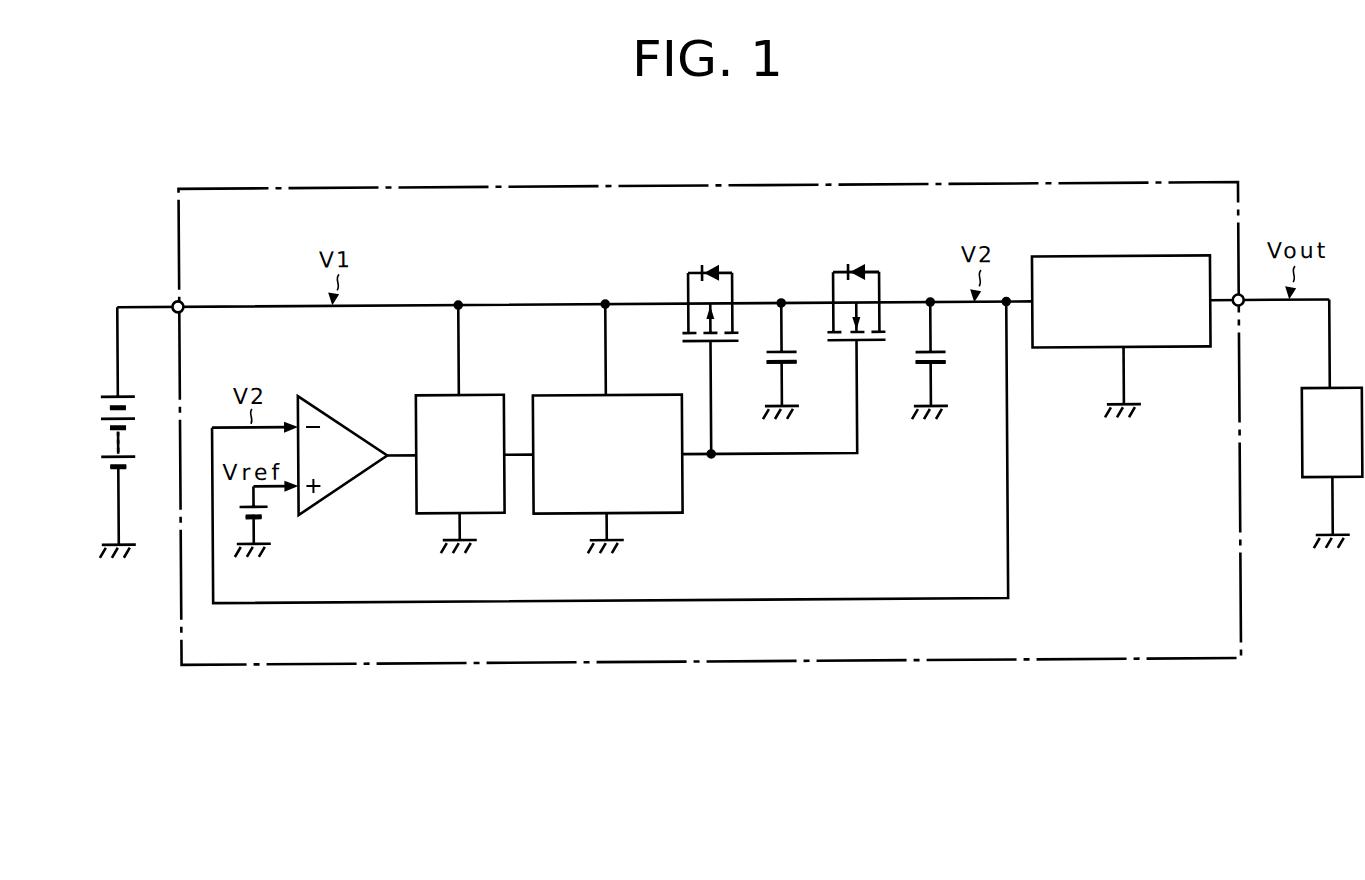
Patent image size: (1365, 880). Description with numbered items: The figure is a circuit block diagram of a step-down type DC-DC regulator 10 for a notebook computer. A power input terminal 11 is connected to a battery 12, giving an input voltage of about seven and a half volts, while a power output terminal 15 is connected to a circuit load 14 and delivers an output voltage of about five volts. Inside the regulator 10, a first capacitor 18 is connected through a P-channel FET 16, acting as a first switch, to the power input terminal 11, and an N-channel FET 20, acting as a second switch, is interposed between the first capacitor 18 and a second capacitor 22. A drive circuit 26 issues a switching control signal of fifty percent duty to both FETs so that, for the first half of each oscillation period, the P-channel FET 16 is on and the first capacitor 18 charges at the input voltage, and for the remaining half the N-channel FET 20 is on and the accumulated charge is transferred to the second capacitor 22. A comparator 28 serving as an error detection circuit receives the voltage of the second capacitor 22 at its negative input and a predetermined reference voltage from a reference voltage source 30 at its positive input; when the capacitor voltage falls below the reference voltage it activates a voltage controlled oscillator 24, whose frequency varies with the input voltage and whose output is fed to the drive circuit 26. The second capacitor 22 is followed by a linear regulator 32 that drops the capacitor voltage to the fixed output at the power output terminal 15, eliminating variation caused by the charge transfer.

The step-down type DC-DC regulator 10 is at (749, 181).
The power input terminal 11 is at (174, 300).
The battery 12 is at (102, 425).
The circuit load 14 is at (1302, 440).
The power output terminal 15 is at (1245, 310).
The P-channel FET 16 is at (684, 342).
The first capacitor 18 is at (767, 361).
The N-channel FET 20 is at (841, 344).
The second capacitor 22 is at (948, 358).
The voltage controlled oscillator 24 is at (436, 394).
The drive circuit 26 is at (558, 394).
The comparator 28 is at (346, 427).
The reference voltage source 30 is at (266, 517).
The linear regulator 32 is at (1121, 258).